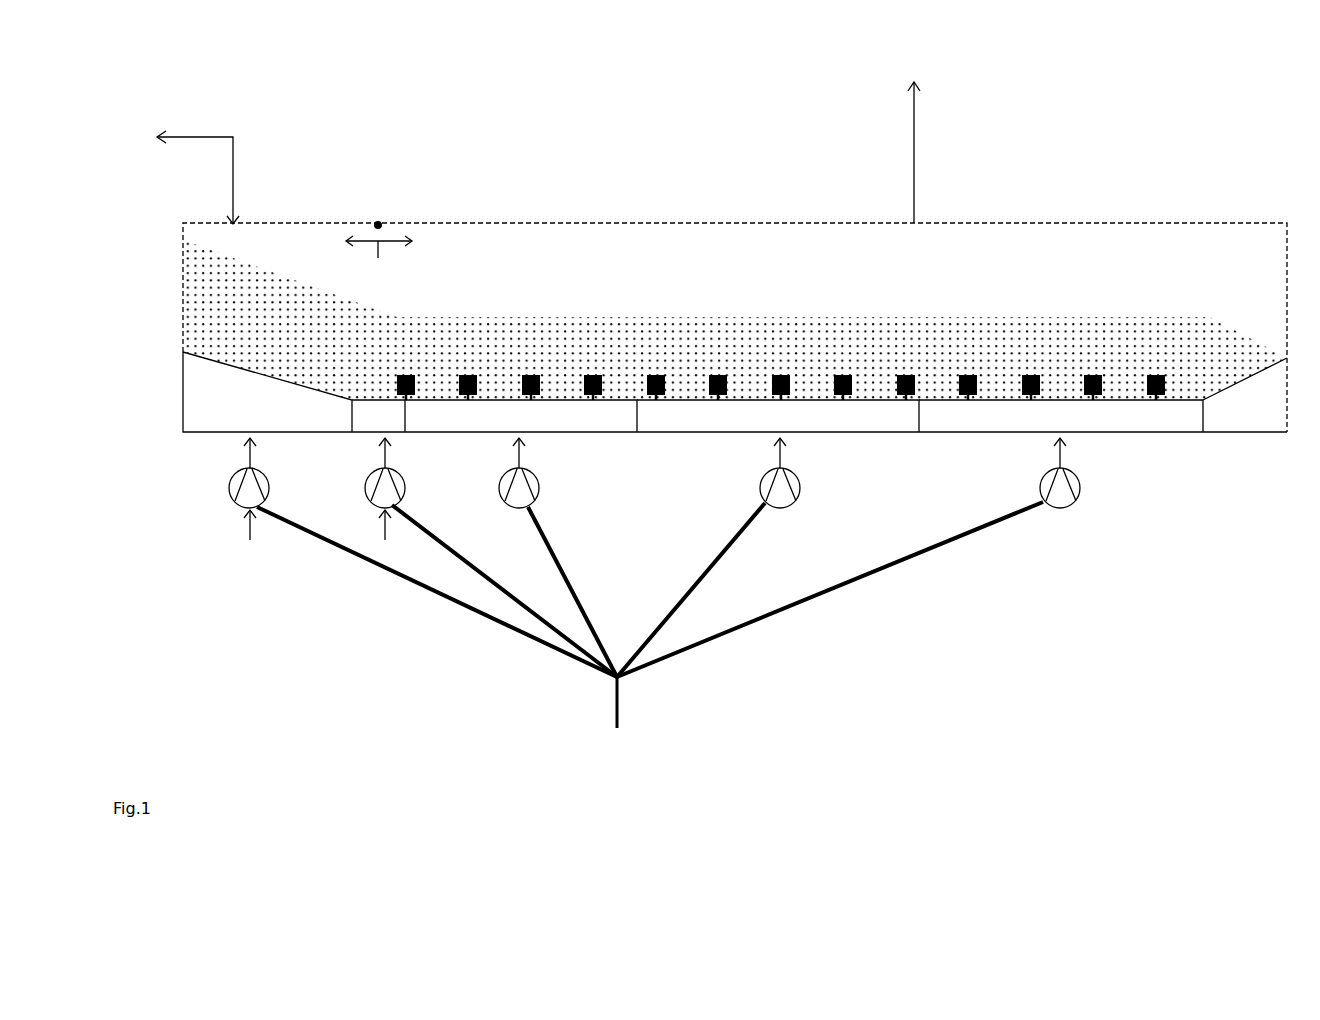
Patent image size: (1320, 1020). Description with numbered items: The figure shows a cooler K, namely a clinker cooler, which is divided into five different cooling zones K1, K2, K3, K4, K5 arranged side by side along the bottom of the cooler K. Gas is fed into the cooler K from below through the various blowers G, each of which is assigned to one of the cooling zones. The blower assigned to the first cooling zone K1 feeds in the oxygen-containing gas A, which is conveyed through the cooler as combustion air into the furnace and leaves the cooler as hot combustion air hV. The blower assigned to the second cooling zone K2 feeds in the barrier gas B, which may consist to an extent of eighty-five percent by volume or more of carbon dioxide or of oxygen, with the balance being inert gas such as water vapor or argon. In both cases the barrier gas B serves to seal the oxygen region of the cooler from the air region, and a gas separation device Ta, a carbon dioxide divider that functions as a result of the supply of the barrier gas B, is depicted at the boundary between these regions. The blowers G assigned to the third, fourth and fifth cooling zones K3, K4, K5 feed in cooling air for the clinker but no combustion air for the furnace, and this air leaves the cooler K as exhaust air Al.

The cooler K is at (1102, 202).
The first cooling zone K1 is at (267, 392).
The second cooling zone K2 is at (378, 416).
The third cooling zone K3 is at (521, 416).
The fourth cooling zone K4 is at (778, 416).
The fifth cooling zone K5 is at (1103, 395).
The hot combustion air hV is at (198, 159).
The gas separation device with barrier gas Ta is at (378, 225).
The exhaust air Al is at (913, 138).
The oxygen-containing gas A is at (423, 557).
The barrier gas B is at (491, 557).
The blower G is at (615, 721).